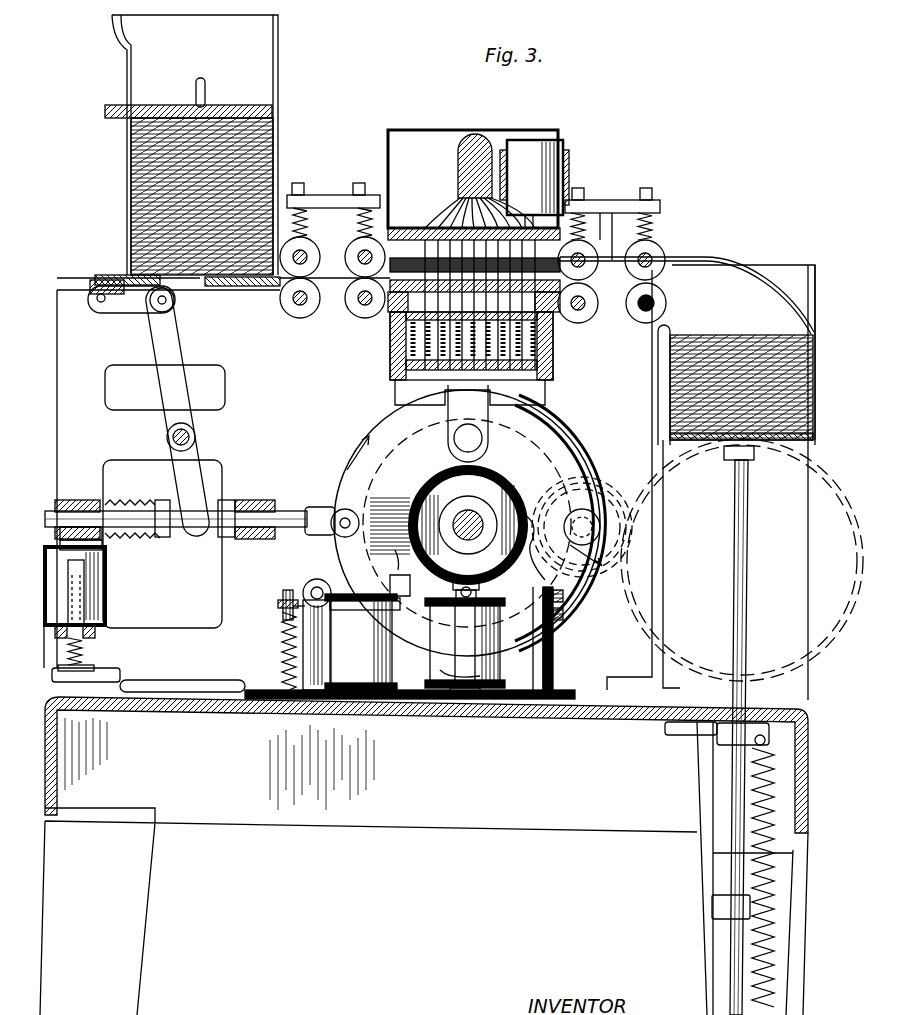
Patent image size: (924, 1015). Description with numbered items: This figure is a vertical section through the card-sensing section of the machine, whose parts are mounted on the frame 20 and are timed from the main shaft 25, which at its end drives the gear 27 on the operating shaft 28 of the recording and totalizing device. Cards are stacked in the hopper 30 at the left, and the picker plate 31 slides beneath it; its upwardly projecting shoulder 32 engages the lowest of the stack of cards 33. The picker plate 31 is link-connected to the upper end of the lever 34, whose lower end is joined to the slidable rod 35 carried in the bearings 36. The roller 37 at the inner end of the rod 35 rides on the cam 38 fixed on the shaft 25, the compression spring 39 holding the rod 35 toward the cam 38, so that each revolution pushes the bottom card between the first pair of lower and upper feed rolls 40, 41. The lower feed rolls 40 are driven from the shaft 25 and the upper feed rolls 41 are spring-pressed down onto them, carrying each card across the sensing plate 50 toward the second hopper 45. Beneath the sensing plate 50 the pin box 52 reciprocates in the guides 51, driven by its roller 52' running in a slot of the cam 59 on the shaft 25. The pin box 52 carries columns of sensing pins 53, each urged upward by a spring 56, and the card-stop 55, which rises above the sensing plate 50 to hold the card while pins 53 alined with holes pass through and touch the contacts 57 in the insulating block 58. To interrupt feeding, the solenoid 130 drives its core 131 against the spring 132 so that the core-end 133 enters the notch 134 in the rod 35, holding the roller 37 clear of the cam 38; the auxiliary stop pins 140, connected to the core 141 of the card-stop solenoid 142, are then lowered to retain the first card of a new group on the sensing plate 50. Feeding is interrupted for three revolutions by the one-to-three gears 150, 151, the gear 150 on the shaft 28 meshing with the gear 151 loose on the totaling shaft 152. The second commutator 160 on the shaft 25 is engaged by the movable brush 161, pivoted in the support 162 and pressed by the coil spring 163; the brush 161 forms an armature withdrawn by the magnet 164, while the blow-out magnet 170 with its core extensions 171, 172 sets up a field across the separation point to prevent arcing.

The frame 20 is at (335, 818).
The main shaft 25 is at (468, 520).
The gear 27 is at (590, 588).
The operating shaft 28 is at (605, 565).
The hopper 30 is at (258, 95).
The picker plate 31 is at (100, 276).
The shoulder 32 is at (118, 277).
The stack of cards 33 is at (262, 161).
The lever 34 is at (176, 352).
The slidable rod 35 is at (262, 520).
The bearings 36 is at (90, 500).
The roller 37 is at (350, 510).
The cam 38 is at (412, 450).
The compression spring 39 is at (140, 495).
The lower feed rolls 40 is at (290, 312).
The upper feed rolls 41 is at (335, 247).
The second hopper 45 is at (736, 355).
The sensing plate 50 is at (395, 286).
The guides 51 is at (545, 356).
The pin box 52 is at (492, 386).
The roller 52' is at (446, 423).
The sensing pins 53 is at (418, 300).
The card-stop 55 is at (565, 310).
The spring 56 is at (388, 362).
The contacts 57 is at (415, 224).
The block of insulating material 58 is at (388, 275).
The cam 59 is at (548, 422).
The solenoid 130 is at (105, 610).
The core 131 is at (80, 600).
The spring 132 is at (95, 648).
The core-end 133 is at (105, 560).
The notch 134 is at (105, 541).
The pins 140 is at (586, 273).
The core 141 is at (583, 228).
The card-stop solenoid 142 is at (548, 158).
The gear 150 is at (605, 490).
The gear 151 is at (652, 468).
The totaling shaft 152 is at (738, 555).
The second commutator 160 is at (608, 443).
The movable brush 161 is at (408, 590).
The support 162 is at (315, 580).
The coil spring 163 is at (296, 635).
The magnet 164 is at (380, 702).
The blow-out magnet 170 is at (495, 660).
The extension 171 is at (486, 588).
The extension 172 is at (445, 676).